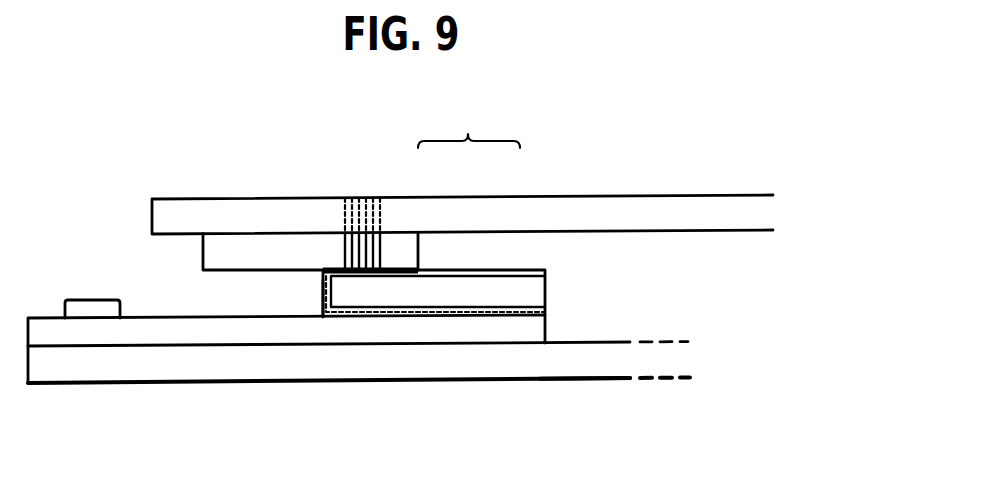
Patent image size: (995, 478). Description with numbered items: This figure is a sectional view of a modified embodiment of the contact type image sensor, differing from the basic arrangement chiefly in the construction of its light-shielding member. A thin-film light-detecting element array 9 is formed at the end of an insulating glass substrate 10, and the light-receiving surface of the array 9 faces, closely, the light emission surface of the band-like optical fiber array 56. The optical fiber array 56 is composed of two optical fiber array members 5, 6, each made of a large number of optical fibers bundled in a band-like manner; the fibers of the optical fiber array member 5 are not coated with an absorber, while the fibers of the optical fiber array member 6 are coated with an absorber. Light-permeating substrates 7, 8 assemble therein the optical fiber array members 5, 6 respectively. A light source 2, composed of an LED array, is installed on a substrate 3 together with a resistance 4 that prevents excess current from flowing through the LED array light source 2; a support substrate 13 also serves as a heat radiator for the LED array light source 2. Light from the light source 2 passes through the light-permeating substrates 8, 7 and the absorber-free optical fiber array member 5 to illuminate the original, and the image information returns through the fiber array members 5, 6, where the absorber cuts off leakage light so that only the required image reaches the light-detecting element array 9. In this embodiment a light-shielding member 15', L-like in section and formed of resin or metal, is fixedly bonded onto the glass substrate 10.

The light source 2 is at (223, 313).
The substrate 3 is at (94, 341).
The resistance 4 is at (92, 306).
The optical fiber array member 5 is at (370, 213).
The optical fiber array member 6 is at (370, 250).
The light-permeating substrate 7 is at (308, 212).
The light-permeating substrate 8 is at (235, 250).
The thin-film light-detecting element array 9 is at (363, 276).
The insulating substrate 10 is at (535, 292).
The support substrate 13 is at (557, 365).
The light-shielding member 15' is at (283, 353).
The optical fiber array 56 is at (469, 124).